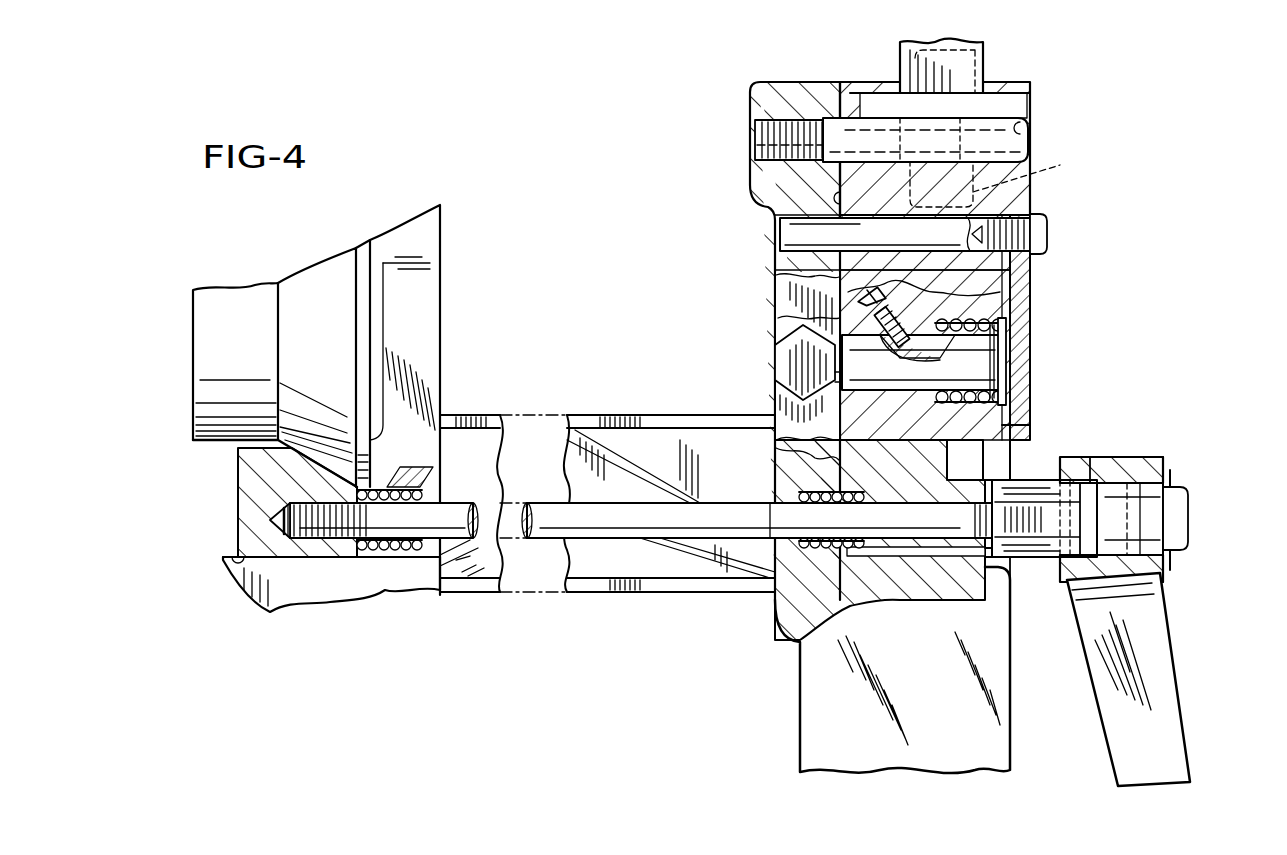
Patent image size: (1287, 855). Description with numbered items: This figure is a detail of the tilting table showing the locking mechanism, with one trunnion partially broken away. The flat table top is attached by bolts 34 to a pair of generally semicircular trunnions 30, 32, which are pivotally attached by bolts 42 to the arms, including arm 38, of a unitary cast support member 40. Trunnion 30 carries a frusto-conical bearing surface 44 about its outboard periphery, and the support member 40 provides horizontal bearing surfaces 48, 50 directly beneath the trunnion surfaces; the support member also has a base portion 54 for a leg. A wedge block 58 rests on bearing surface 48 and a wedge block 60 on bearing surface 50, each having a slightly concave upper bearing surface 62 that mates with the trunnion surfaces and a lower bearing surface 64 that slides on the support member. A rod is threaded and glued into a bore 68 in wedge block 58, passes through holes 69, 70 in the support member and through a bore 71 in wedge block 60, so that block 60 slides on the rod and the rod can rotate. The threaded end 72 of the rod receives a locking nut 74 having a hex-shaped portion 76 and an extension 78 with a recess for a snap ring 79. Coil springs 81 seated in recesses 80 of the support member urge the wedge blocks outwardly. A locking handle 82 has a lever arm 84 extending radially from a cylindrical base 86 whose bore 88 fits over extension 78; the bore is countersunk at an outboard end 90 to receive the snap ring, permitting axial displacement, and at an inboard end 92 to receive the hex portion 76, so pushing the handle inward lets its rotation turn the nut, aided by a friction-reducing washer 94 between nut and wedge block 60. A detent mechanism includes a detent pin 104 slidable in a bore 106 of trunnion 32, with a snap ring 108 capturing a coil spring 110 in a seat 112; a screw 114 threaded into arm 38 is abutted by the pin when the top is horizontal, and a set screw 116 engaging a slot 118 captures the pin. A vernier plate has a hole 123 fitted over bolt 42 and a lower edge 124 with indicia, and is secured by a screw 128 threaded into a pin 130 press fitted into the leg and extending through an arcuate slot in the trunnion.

The trunnion 30 is at (358, 338).
The trunnion 32 is at (1030, 296).
The bolts 34 is at (1015, 192).
The arm 38 is at (795, 297).
The support member 40 is at (645, 410).
The bolts 42 is at (760, 138).
The bearing surface 44 is at (330, 326).
The bearing surface 48 is at (330, 550).
The bearing surface 50 is at (922, 570).
The base portion 54 is at (818, 738).
The wedge block 58 is at (245, 497).
The wedge block 60 is at (1005, 432).
The upper bearing surface 62 is at (312, 460).
The lower bearing surface 64 is at (245, 557).
The bore 68 is at (290, 503).
The hole 69 is at (460, 498).
The hole 70 is at (772, 500).
The bore 71 is at (956, 446).
The end of rod 72 is at (950, 555).
The locking nut 74 is at (1037, 482).
The hex-shaped portion 76 is at (1007, 487).
The extension 78 is at (1187, 513).
The snap ring 79 is at (1172, 553).
The recesses 80 is at (393, 552).
The coil springs 81 is at (372, 552).
The locking handle 82 is at (1126, 446).
The lever arm 84 is at (1157, 642).
The base 86 is at (1067, 570).
The bore 88 is at (1162, 462).
The outboard end 90 is at (1178, 492).
The inboard end 92 is at (1102, 470).
The friction-reducing washer 94 is at (995, 560).
The detent pin 104 is at (980, 350).
The bore 106 is at (848, 378).
The snap ring 108 is at (970, 392).
The coil spring 110 is at (1003, 330).
The seat 112 is at (985, 358).
The screw 114 is at (790, 360).
The set screw 116 is at (812, 320).
The slot 118 is at (882, 298).
The hole 123 is at (1030, 130).
The lower edge 124 is at (1030, 410).
The screw 128 is at (1044, 230).
The pin 130 is at (920, 248).